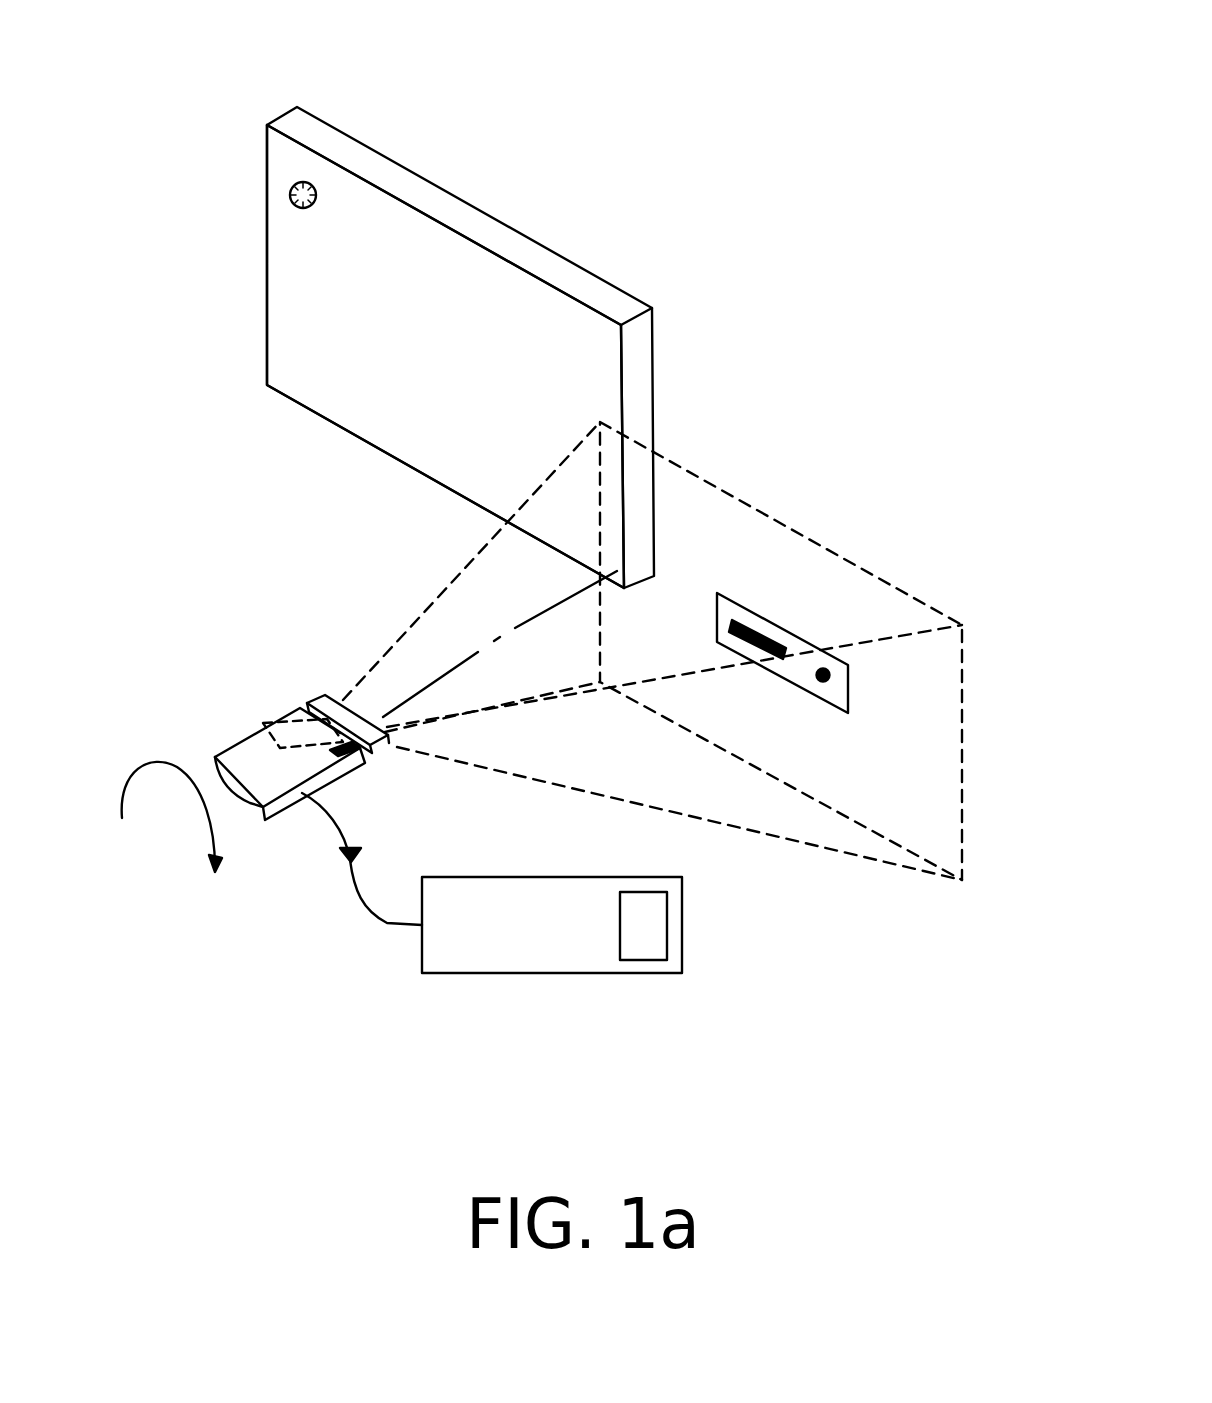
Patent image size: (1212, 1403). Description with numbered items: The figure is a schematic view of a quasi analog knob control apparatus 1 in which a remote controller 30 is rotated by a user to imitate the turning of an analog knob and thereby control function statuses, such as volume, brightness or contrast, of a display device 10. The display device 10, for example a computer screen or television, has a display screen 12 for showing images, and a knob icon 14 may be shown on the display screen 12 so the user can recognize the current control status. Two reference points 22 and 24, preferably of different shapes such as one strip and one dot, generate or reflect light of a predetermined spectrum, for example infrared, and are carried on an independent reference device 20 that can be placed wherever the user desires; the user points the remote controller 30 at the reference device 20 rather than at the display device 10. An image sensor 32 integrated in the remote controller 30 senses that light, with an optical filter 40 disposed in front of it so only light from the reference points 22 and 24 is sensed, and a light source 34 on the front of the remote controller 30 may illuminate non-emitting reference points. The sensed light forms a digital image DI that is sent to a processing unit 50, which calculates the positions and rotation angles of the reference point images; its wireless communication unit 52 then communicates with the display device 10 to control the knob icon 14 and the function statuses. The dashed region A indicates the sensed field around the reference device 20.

The quasi analog knob control apparatus 1 is at (697, 68).
The display device 10 is at (279, 116).
The display screen 12 is at (287, 302).
The knob icon 14 is at (288, 193).
The reference device 20 is at (783, 627).
The reference point 22 is at (740, 621).
The reference point 24 is at (823, 668).
The remote controller 30 is at (227, 750).
The image sensor 32 is at (253, 720).
The light source 34 is at (360, 762).
The optical filter 40 is at (313, 702).
The processing unit 50 is at (523, 877).
The wireless communication unit 52 is at (682, 925).
The digital image DI is at (357, 858).
The field of view area A is at (919, 601).